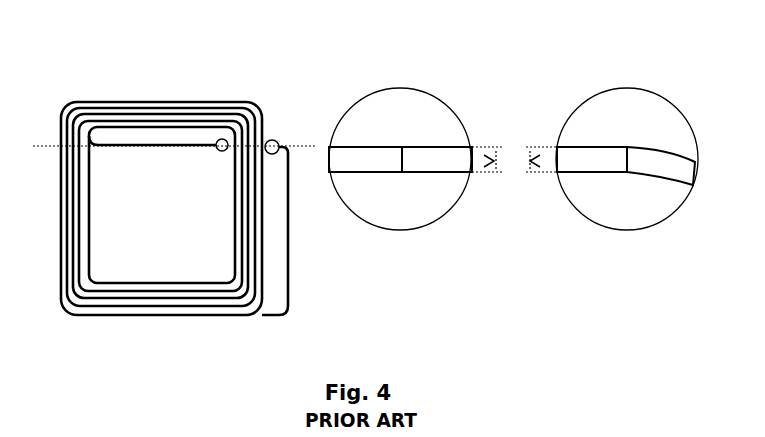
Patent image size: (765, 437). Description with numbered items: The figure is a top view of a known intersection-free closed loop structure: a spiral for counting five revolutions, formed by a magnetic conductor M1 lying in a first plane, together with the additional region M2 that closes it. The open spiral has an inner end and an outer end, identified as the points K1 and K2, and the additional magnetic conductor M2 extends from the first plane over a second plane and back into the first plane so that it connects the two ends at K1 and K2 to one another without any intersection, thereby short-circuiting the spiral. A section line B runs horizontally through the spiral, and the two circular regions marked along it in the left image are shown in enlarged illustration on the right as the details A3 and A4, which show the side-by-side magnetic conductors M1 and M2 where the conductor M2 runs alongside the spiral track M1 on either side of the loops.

The connection point K1 is at (217, 151).
The connection point K2 is at (274, 139).
The magnetic conductor M1 is at (512, 166).
The additional magnetic conductor M2 is at (514, 159).
The enlarged circular region A3 is at (380, 90).
The enlarged circular region A4 is at (618, 88).
The section line B is at (175, 135).